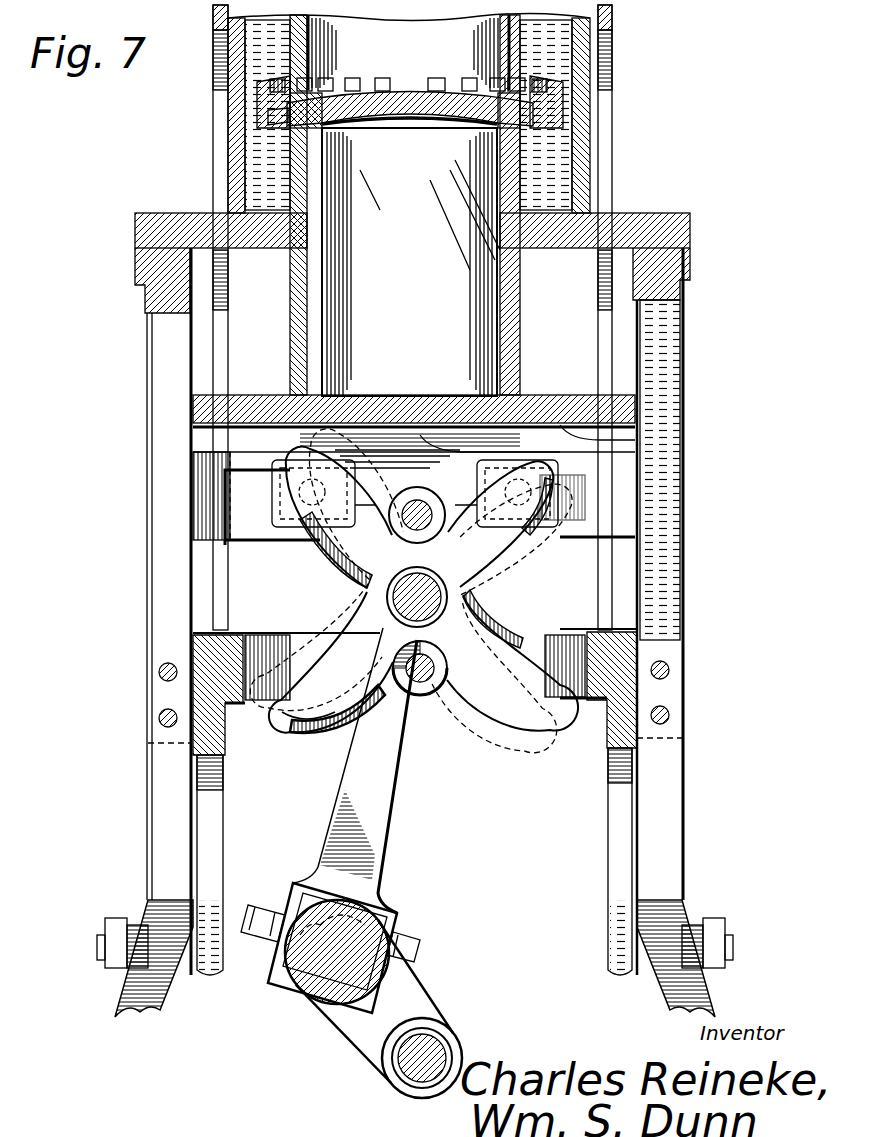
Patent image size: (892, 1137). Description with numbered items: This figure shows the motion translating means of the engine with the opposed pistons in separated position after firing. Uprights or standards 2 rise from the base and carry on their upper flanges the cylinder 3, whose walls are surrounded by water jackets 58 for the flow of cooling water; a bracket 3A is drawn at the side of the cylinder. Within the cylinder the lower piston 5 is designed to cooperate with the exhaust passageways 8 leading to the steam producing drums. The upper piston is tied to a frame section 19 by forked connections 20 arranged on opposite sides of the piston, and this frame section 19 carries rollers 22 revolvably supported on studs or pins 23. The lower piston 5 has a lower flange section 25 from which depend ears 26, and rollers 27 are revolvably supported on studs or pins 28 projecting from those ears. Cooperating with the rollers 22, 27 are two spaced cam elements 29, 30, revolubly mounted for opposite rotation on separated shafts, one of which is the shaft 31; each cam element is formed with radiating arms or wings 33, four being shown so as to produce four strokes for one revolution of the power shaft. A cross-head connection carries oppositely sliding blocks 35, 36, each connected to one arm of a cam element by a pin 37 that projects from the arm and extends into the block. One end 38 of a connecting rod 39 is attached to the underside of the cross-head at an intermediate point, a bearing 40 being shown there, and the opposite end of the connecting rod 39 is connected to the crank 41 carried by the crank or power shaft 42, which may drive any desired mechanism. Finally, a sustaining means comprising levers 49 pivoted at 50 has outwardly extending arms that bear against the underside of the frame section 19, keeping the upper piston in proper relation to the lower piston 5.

The uprights or standards 2 is at (155, 370).
The cylinder 3 is at (412, 204).
The cylinder bracket 3A is at (210, 468).
The lower piston 5 is at (411, 262).
The exhaust passageways 8 is at (330, 105).
The frame section 19 is at (610, 652).
The forked connections 20 is at (278, 368).
The rollers 22 is at (422, 696).
The studs or pins 23 is at (437, 670).
The lower flange section 25 is at (630, 432).
The ears 26 is at (333, 440).
The rollers 27 is at (425, 492).
The studs or pins 28 is at (505, 400).
The cam element 29 is at (289, 725).
The cam element 30 is at (330, 765).
The shaft 31 is at (417, 607).
The radiating arms or wings 33 is at (480, 650).
The sliding block 35 is at (560, 522).
The sliding block 36 is at (297, 512).
The pin 37 is at (565, 487).
The end of connecting rod 38 is at (432, 560).
The connecting rod 39 is at (373, 820).
The bearing 40 is at (442, 582).
The crank 41 is at (420, 1003).
The crank or power shaft 42 is at (443, 1046).
The levers 49 is at (210, 818).
The pivot 50 is at (197, 930).
The water jackets 58 is at (575, 62).